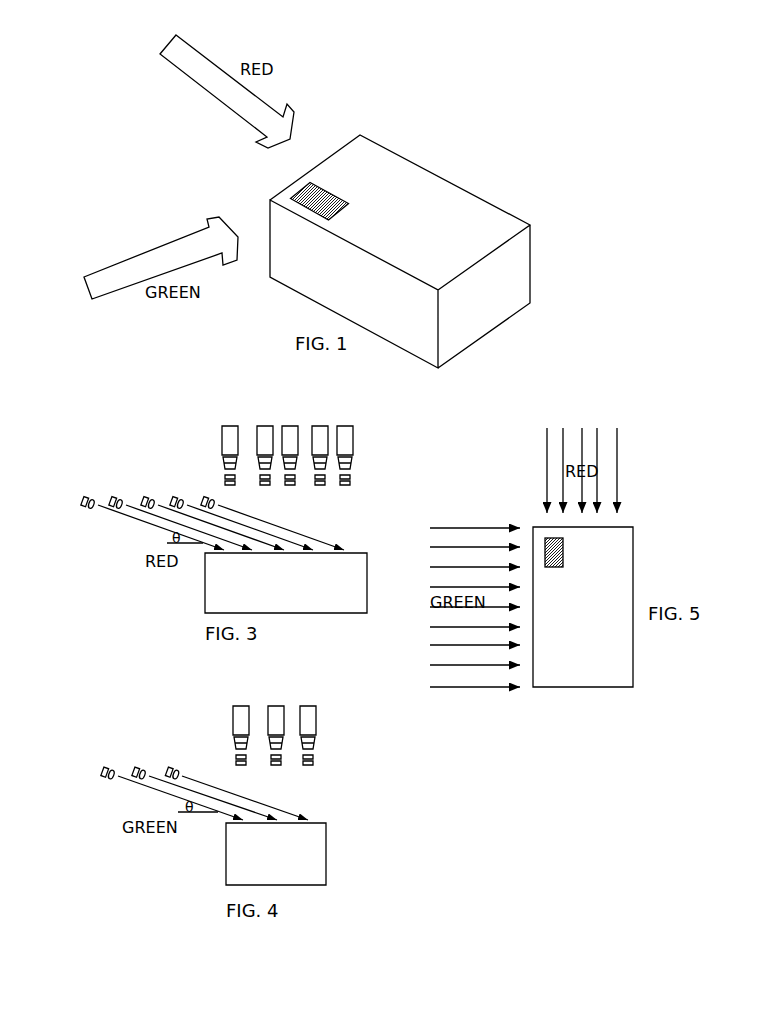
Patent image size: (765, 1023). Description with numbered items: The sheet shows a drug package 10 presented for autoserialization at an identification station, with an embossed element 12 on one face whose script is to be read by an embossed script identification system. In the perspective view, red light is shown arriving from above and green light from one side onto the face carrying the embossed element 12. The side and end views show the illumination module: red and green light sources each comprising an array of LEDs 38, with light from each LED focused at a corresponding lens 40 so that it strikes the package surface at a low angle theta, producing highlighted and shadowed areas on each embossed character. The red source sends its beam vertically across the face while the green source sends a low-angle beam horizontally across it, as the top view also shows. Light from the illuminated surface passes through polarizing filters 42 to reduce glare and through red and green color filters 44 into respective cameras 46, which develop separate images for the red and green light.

In FIG. 1, the drug package 10 is at (427, 187).
In FIG. 4, the drug package 10 is at (308, 840).
In FIG. 5, the drug package 10 is at (618, 665).
In FIG. 1, the embossed element 12 is at (305, 188).
In FIG. 5, the embossed element 12 is at (553, 553).
In FIG. 3, the LEDs 38 is at (147, 501).
In FIG. 4, the LEDs 38 is at (170, 772).
In FIG. 3, the lens 40 is at (151, 505).
In FIG. 4, the lens 40 is at (175, 776).
In FIG. 4, the polarizing filters 42 is at (240, 765).
In FIG. 4, the red and green color filters 44 is at (306, 751).
In FIG. 4, the cameras 46 is at (240, 720).